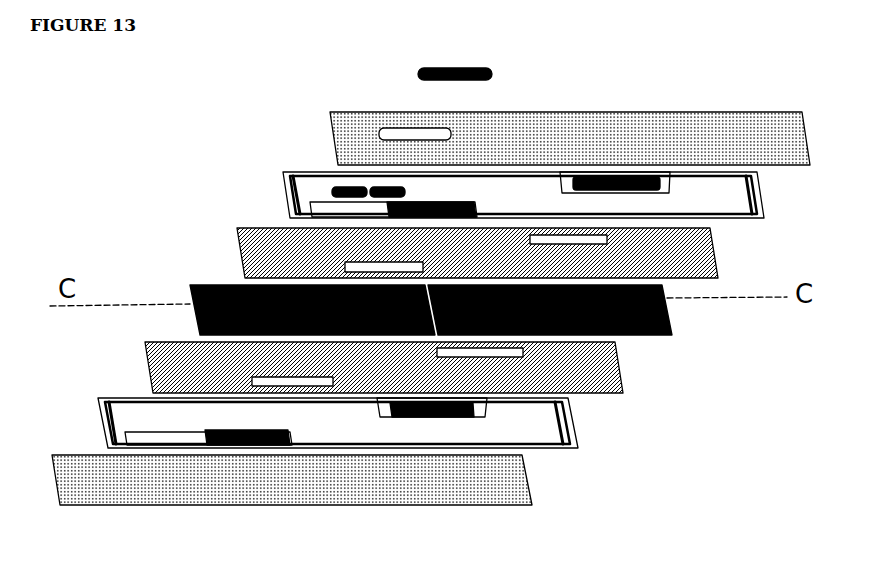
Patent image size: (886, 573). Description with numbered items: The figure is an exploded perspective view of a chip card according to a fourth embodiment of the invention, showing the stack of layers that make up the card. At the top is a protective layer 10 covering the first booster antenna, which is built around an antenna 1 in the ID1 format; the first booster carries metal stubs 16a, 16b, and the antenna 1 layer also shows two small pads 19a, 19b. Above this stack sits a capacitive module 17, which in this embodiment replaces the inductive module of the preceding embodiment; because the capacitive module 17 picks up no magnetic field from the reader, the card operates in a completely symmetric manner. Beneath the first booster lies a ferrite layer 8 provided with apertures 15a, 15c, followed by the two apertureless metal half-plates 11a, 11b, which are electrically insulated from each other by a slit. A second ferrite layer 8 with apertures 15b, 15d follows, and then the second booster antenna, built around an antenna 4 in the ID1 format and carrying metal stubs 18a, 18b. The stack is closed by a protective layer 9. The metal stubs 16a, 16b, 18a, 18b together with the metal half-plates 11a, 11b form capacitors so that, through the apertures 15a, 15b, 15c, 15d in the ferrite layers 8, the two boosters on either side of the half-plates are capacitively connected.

The antenna 1 is at (747, 193).
The antenna 4 is at (565, 423).
The ferrite layer 8 is at (703, 245).
The protective layer 9 is at (513, 483).
The protective layer 10 is at (787, 118).
The metal half-plate 11a is at (193, 322).
The metal half-plate 11b is at (667, 317).
The aperture 15a is at (347, 263).
The aperture 15b is at (258, 378).
The aperture 15c is at (607, 240).
The aperture 15d is at (507, 353).
The metal stub 16a is at (458, 203).
The metal stub 16b is at (635, 177).
The capacitive module 17 is at (480, 65).
The metal stub 18a is at (222, 445).
The metal stub 18b is at (420, 417).
The first terminal pad 19a is at (342, 187).
The second terminal pad 19b is at (388, 205).